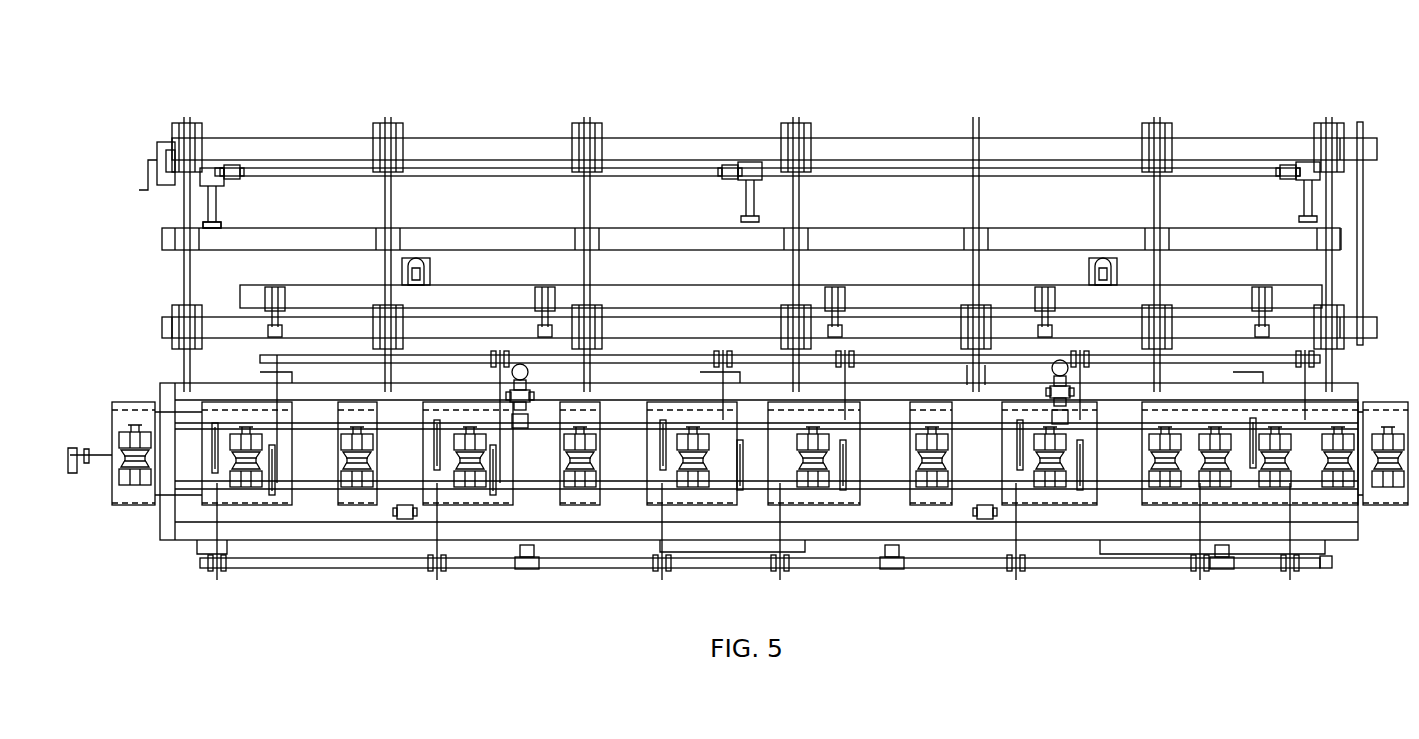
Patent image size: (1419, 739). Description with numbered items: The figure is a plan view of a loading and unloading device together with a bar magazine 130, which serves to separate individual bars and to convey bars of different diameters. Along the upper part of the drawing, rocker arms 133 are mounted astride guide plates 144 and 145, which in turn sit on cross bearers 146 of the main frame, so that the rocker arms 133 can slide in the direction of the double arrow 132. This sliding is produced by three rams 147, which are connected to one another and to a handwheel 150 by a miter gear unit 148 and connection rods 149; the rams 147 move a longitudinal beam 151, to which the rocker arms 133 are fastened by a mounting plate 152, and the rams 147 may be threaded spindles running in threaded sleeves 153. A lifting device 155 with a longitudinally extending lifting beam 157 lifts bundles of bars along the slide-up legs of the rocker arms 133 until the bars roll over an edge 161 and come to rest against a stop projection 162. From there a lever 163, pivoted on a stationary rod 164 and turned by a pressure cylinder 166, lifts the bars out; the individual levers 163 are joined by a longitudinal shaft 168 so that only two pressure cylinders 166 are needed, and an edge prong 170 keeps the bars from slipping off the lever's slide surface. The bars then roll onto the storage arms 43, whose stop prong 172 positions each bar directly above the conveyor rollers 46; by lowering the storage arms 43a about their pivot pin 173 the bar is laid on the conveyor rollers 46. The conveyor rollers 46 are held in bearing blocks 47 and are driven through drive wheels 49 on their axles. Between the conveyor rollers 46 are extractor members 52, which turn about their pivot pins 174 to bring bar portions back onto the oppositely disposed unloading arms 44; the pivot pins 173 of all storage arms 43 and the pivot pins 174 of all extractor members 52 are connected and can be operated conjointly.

The bar magazine 130 is at (462, 135).
The double arrow 132 is at (868, 178).
The rocker arm 133 is at (396, 201).
The guide plate 144 is at (200, 152).
The guide plate 145 is at (196, 312).
The cross bearer 146 is at (326, 148).
The ram 147 is at (218, 200).
The miter gear unit 148 is at (1298, 152).
The connection rod 149 is at (1058, 172).
The handwheel 150 is at (150, 182).
The longitudinal beam 151 is at (632, 237).
The mounting plate 152 is at (582, 233).
The threaded sleeve 153 is at (226, 222).
The lifting device 155 is at (636, 282).
The lifting beam 157 is at (873, 296).
The edge 161 is at (976, 322).
The stop projection 162 is at (966, 382).
The lever 163 is at (960, 457).
The stationary rod 164 is at (760, 453).
The pressure cylinder 166 is at (520, 362).
The longitudinal shaft 168 is at (682, 356).
The edge prong 170 is at (848, 373).
The stop prong 172 is at (658, 470).
The pivot pin 173 is at (641, 440).
The pivot pin 174 is at (875, 490).
The storage arm 43 is at (1020, 420).
The storage arm 43a is at (663, 420).
The unloading arm 44 is at (212, 548).
The conveyor roller 46 is at (258, 476).
The bearing block 47 is at (340, 443).
The drive wheel 49 is at (575, 422).
The extractor member 52 is at (848, 468).